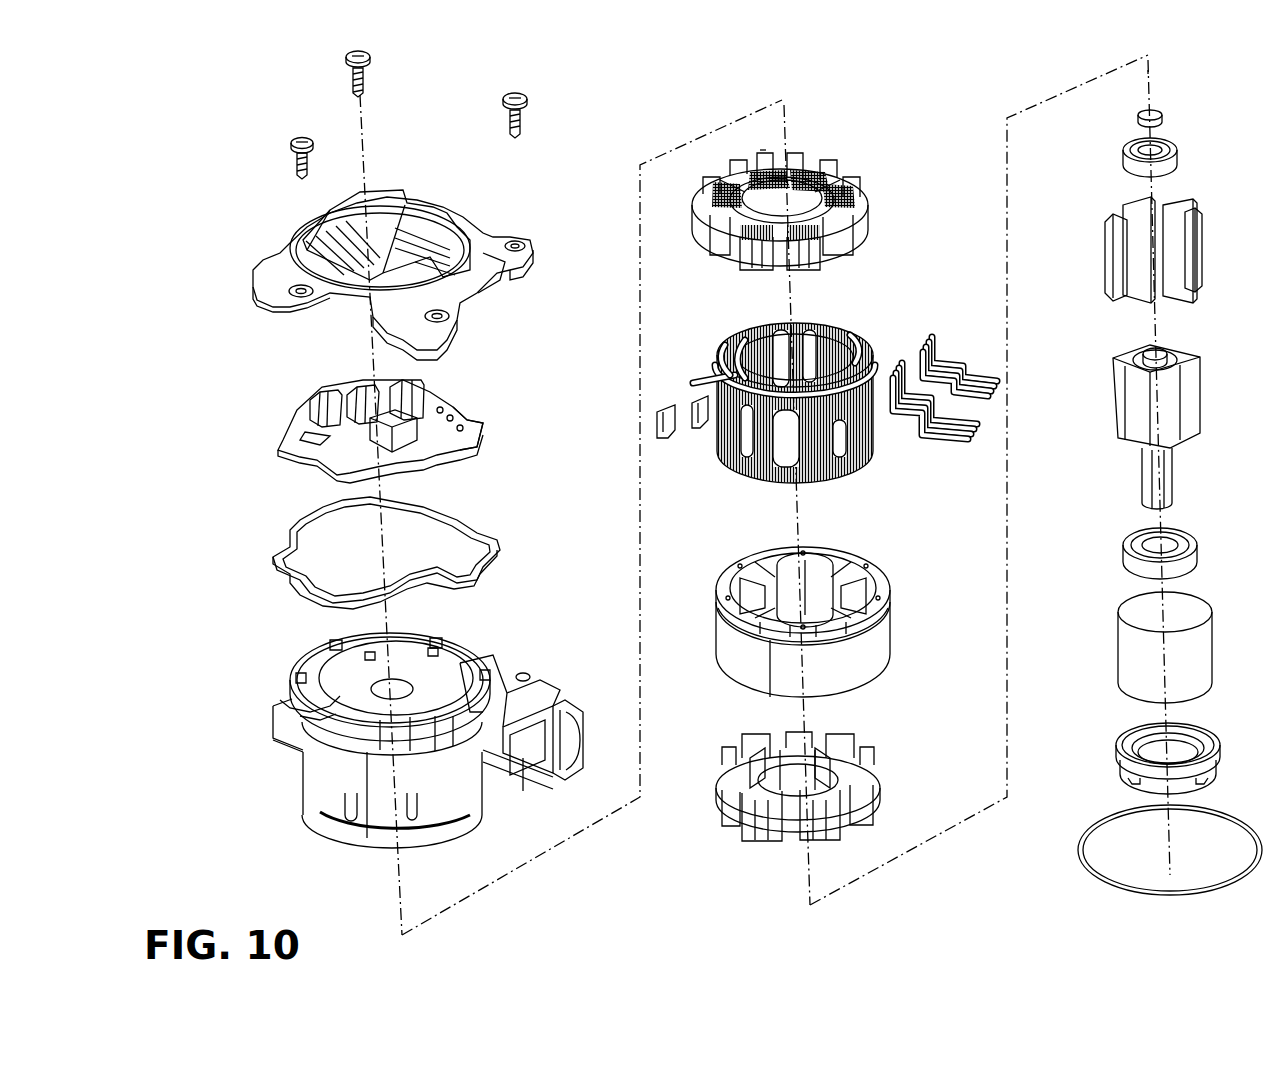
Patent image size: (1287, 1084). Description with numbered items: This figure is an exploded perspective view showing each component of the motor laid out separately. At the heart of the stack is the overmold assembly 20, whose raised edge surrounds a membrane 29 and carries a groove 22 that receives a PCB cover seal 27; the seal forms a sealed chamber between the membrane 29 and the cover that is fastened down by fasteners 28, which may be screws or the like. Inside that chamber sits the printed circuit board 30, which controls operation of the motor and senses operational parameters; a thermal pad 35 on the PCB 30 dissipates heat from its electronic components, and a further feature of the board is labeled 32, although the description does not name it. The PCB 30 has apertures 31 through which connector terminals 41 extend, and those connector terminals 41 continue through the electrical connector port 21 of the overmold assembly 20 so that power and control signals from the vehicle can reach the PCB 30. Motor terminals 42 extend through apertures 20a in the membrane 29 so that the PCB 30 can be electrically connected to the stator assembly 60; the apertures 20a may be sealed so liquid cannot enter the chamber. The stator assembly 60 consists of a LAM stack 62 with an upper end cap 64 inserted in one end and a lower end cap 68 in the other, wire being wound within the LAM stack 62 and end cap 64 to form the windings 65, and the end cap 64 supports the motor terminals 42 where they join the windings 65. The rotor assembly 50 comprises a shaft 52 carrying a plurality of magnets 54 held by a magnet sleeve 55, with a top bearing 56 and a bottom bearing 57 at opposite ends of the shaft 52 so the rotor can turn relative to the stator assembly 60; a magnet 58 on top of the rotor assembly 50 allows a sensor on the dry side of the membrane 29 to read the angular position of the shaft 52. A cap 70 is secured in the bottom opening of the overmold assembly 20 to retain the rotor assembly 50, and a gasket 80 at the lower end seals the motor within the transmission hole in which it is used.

The overmold assembly 20 is at (337, 787).
The apertures 20a is at (300, 690).
The electrical connector port 21 is at (525, 765).
The groove 22 is at (305, 665).
The PCB cover seal 27 is at (312, 518).
The fasteners 28 is at (352, 62).
The membrane 29 is at (415, 660).
The printed circuit board 30 is at (300, 437).
The apertures 31 is at (465, 420).
The circuit board pad 32 is at (323, 455).
The thermal pad 35 is at (397, 437).
The connector terminals 41 is at (990, 328).
The motor terminals 42 is at (706, 425).
The rotor assembly 50 is at (1197, 84).
The shaft 52 is at (1180, 415).
The magnets 54 is at (1178, 270).
The magnet sleeve 55 is at (385, 212).
The top bearing 56 is at (1190, 558).
The bottom bearing 57 is at (1178, 165).
The magnet 58 is at (1160, 112).
The stator assembly 60 is at (808, 112).
The LAM stack 62 is at (880, 583).
The upper end cap 64 is at (835, 172).
The windings 65 is at (825, 332).
The lower end cap 68 is at (880, 765).
The cap 70 is at (1215, 745).
The gasket 80 is at (1082, 855).